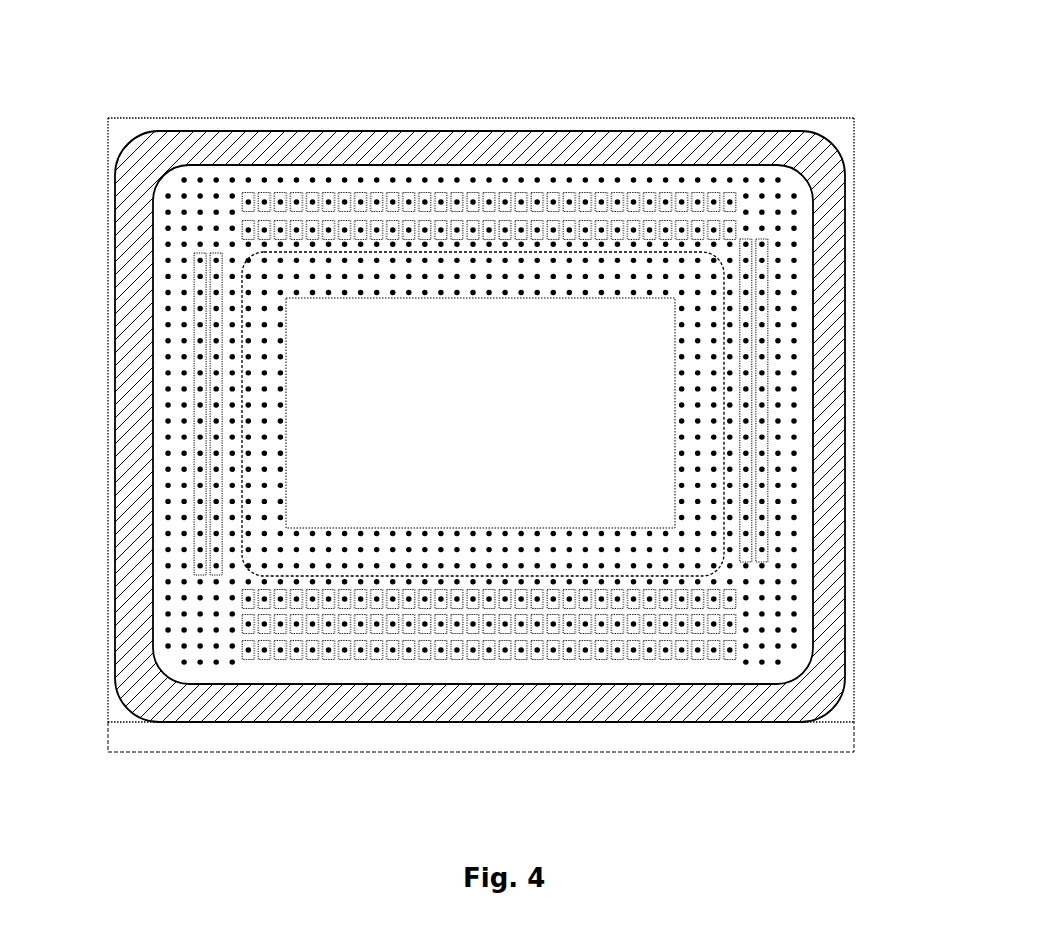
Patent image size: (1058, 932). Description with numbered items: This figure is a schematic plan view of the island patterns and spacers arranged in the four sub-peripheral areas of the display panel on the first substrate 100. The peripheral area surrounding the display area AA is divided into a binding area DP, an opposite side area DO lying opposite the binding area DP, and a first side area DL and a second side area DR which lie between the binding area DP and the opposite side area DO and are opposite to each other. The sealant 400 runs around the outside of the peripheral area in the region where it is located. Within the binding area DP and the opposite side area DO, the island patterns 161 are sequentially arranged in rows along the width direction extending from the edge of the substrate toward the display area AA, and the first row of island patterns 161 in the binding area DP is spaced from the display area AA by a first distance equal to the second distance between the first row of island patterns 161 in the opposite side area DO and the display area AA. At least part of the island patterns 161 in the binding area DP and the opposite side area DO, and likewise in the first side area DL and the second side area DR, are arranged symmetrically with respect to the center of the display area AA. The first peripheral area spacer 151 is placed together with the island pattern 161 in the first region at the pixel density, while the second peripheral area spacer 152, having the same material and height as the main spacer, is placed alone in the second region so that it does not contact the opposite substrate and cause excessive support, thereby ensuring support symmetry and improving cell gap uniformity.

The first substrate 100 is at (120, 123).
The sealant 400 is at (336, 128).
The opposite side area DO is at (497, 127).
The first side area DL is at (107, 327).
The second side area DR is at (845, 398).
The binding area DP is at (492, 737).
The active area AA is at (480, 413).
The first peripheral area spacer 151 is at (762, 311).
The second peripheral area spacer 152 is at (800, 583).
The island pattern 161 is at (732, 198).